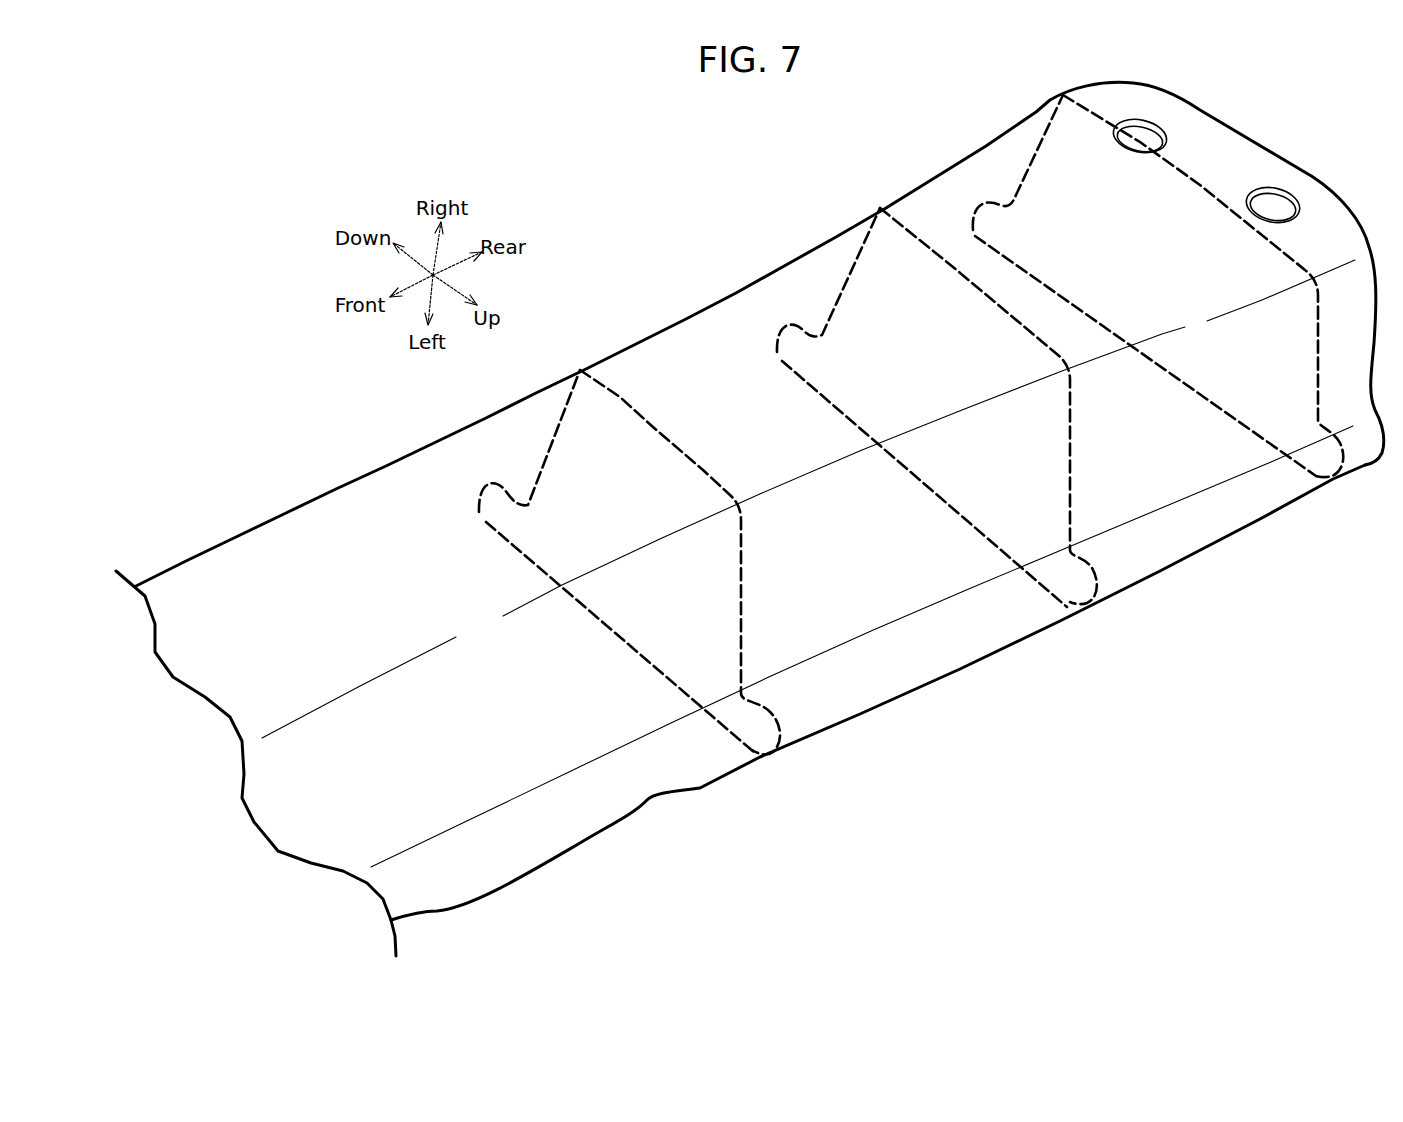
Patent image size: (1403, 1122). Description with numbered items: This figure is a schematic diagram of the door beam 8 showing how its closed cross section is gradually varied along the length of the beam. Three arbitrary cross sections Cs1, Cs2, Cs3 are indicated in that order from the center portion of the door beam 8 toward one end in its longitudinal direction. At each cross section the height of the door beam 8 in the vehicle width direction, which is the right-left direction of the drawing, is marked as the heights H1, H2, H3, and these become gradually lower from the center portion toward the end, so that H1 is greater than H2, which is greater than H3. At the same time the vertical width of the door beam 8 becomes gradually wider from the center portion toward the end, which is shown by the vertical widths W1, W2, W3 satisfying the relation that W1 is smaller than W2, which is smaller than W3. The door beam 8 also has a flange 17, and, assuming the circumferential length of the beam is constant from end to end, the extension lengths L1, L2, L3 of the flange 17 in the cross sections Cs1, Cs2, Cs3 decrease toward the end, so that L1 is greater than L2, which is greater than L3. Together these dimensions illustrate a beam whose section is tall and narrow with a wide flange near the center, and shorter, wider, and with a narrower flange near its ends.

The door beam 8 is at (738, 257).
The flange 17 is at (1180, 525).
The cross section Cs1 is at (630, 398).
The cross section Cs2 is at (925, 238).
The cross section Cs3 is at (1183, 155).
The height H1 is at (657, 652).
The height H2 is at (958, 496).
The height H3 is at (1203, 185).
The vertical width W1 is at (782, 877).
The vertical width W2 is at (1092, 733).
The vertical width W3 is at (973, 230).
The extension length L1 is at (736, 713).
The extension length L2 is at (1065, 558).
The extension length L3 is at (1293, 488).